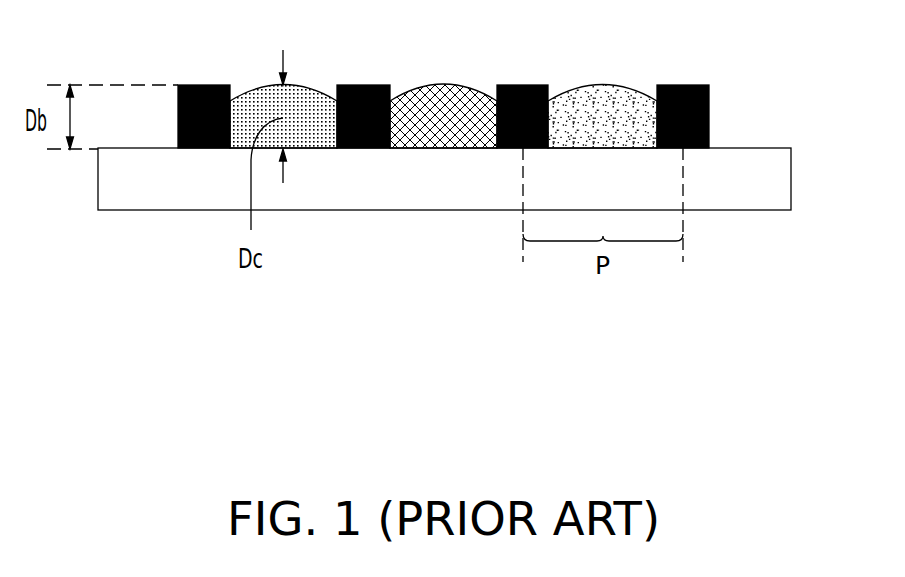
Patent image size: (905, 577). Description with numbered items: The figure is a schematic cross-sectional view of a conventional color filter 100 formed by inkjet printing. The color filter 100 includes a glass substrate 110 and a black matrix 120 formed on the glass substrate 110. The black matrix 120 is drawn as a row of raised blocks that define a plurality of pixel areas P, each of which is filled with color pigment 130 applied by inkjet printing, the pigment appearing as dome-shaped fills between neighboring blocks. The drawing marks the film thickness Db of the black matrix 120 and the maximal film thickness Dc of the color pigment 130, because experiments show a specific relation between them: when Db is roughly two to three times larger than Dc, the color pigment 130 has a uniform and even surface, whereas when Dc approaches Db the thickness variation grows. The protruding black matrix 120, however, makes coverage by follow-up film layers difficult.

The color filter 100 is at (482, 162).
The glass substrate 110 is at (747, 180).
The black matrix 120 is at (709, 108).
The color pigment 130 is at (608, 108).